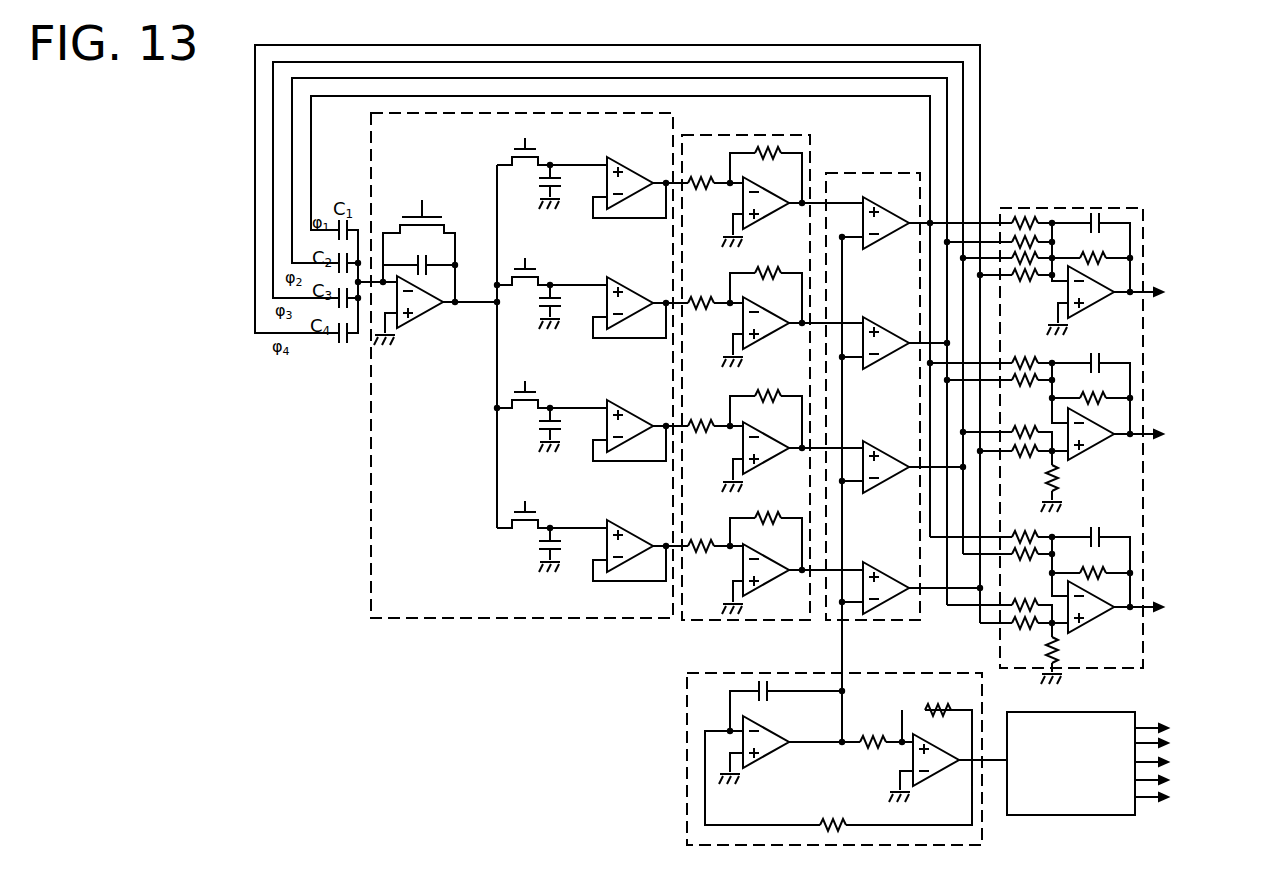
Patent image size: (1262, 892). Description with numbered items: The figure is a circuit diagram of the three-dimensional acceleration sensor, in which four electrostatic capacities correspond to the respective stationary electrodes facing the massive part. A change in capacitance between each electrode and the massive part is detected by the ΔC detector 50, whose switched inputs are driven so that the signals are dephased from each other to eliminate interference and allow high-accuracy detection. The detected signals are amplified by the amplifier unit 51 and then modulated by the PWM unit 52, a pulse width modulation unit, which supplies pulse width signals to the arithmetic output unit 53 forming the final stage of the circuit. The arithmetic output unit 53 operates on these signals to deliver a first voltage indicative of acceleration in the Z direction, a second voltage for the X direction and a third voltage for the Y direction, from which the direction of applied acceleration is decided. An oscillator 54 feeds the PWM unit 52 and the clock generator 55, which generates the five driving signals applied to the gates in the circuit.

The ΔC detector 50 is at (371, 618).
The amplifier unit 51 is at (803, 135).
The PWM unit 52 is at (918, 173).
The arithmetic output unit 53 is at (1143, 208).
The oscillator 54 is at (687, 673).
The clock generator 55 is at (1065, 815).